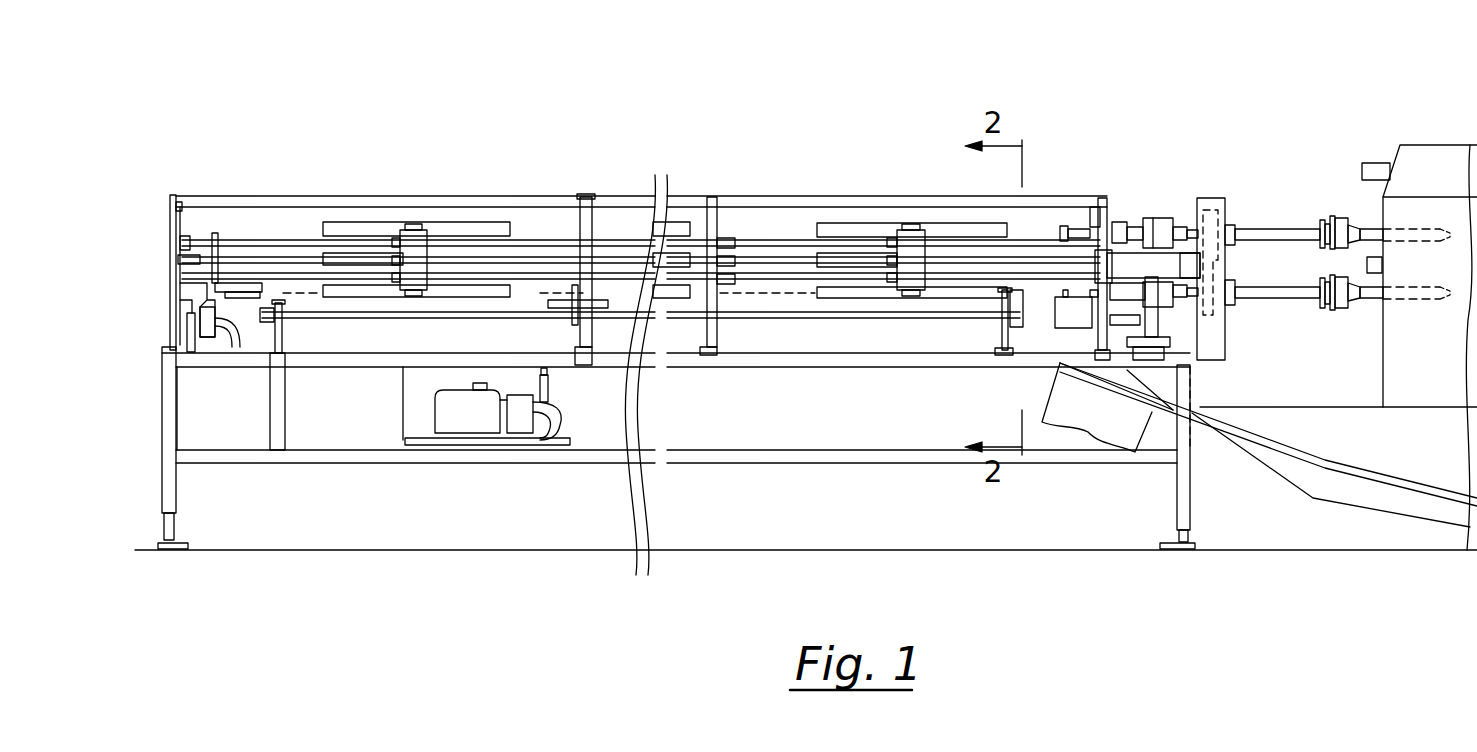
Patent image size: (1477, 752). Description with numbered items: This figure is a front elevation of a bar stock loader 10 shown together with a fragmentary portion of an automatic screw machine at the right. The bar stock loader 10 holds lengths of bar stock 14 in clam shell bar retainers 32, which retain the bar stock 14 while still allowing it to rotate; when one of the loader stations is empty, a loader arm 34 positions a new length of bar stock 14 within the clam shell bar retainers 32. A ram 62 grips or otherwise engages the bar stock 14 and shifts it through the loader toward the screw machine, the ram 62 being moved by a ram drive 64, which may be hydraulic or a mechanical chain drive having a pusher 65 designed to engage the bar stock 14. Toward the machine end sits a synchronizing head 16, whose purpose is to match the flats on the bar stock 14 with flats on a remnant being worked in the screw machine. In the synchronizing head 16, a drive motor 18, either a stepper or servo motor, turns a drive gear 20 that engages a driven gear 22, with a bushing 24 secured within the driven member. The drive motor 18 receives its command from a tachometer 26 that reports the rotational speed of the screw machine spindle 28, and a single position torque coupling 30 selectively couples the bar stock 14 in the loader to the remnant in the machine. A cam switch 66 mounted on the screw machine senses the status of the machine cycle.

The bar stock loader 10 is at (776, 188).
The bar stock 14 is at (796, 297).
The synchronizing head 16 is at (1180, 208).
The drive motor 18 is at (1082, 330).
The drive gear 20 is at (1157, 315).
The driven gear 22 is at (1098, 260).
The bushing 24 is at (1063, 290).
The tachometer 26 is at (1367, 264).
The spindle 28 is at (1357, 228).
The single position torque coupling 30 is at (1162, 220).
The clam shell bar retainers 32 is at (385, 232).
The loader arm 34 is at (980, 325).
The ram 62 is at (240, 322).
The ram drive 64 is at (211, 322).
The pusher 65 is at (253, 290).
The cam switch 66 is at (1373, 163).